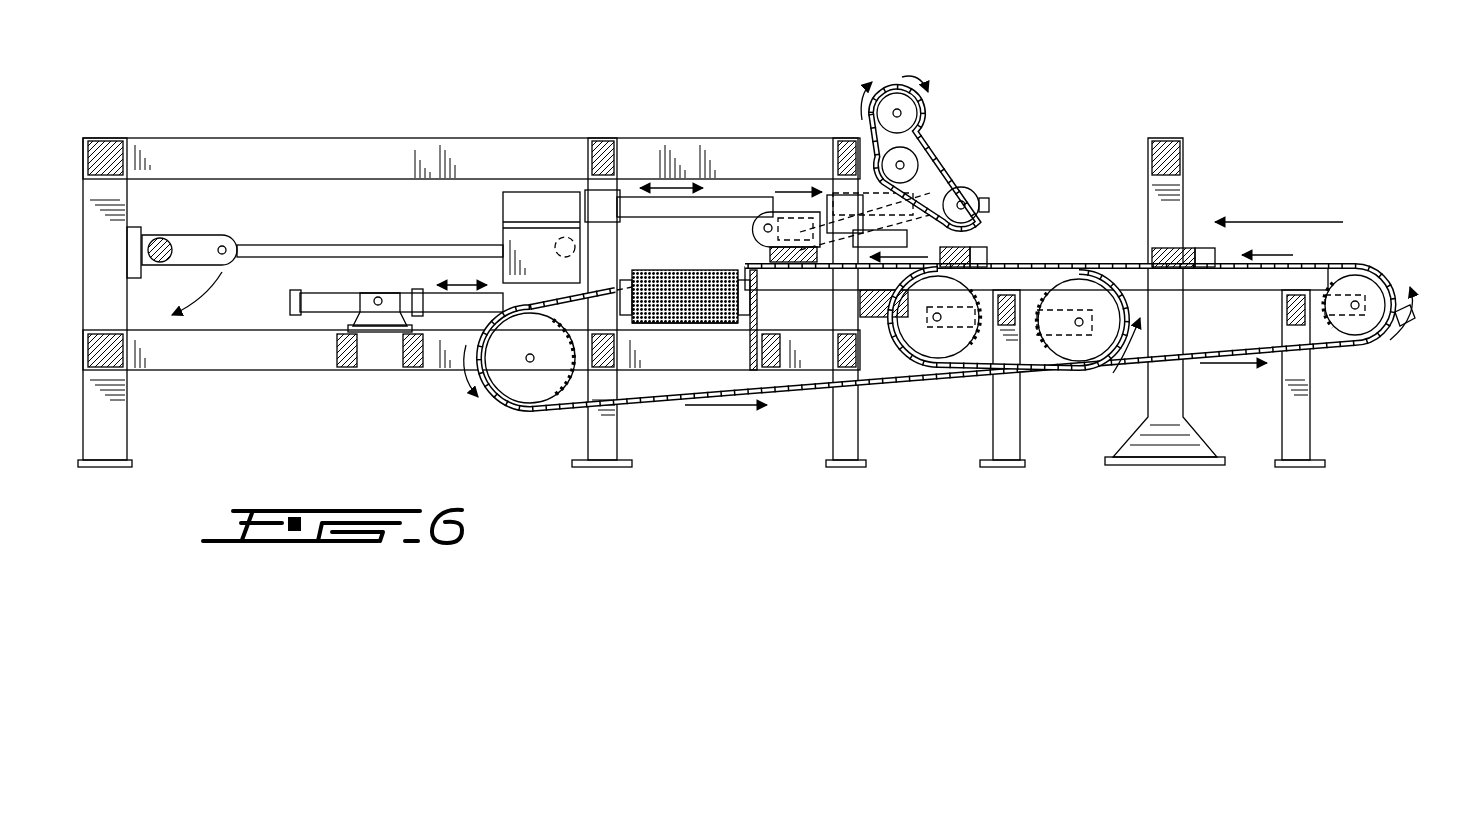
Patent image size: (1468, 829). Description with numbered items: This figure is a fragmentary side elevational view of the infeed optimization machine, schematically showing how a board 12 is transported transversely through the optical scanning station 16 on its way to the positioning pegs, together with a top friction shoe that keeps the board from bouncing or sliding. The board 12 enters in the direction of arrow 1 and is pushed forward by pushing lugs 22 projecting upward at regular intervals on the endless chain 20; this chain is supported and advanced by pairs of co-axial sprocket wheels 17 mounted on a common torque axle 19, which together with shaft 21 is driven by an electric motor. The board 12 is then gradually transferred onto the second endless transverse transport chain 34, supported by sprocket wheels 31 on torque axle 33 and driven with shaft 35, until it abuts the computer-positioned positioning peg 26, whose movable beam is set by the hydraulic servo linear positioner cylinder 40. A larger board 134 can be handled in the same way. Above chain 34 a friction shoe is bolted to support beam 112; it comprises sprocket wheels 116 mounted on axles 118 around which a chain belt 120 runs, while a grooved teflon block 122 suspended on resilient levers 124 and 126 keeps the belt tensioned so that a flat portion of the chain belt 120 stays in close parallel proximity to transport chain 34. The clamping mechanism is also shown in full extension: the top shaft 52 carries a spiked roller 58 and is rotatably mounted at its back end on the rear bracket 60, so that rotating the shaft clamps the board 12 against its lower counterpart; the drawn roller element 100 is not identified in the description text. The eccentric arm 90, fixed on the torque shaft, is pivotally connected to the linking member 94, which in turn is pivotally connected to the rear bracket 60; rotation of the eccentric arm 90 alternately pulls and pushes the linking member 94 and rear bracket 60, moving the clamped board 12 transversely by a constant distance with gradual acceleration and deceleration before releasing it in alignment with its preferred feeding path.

The arrow 1 is at (1320, 218).
The board 12 is at (968, 238).
The optical scanning station 16 is at (1180, 200).
The sprocket wheels 17 is at (1402, 285).
The torque axle 19 is at (1355, 309).
The endless chain 20 is at (1350, 275).
The shaft 21 is at (937, 322).
The pushing lugs 22 is at (990, 255).
The positioning peg 26 is at (745, 320).
The sprocket wheels 31 is at (1088, 293).
The torque axle 33 is at (1079, 326).
The endless transverse transport chain 34 is at (1095, 370).
The shaft 35 is at (528, 362).
The servo linear positioner cylinder 40 is at (380, 318).
The top shaft 52 is at (672, 150).
The spiked roller 58 is at (762, 255).
The rear bracket 60 is at (527, 223).
The eccentric arm 90 is at (210, 236).
The linking member 94 is at (352, 250).
The roller 100 is at (675, 322).
The support beam 112 is at (863, 200).
The sprocket wheels 116 is at (905, 118).
The axles 118 is at (970, 203).
The chain belt 120 is at (913, 163).
The grooved teflon block 122 is at (755, 215).
The resilient lever 124 is at (833, 210).
The resilient lever 126 is at (883, 207).
The board 134 is at (1180, 248).